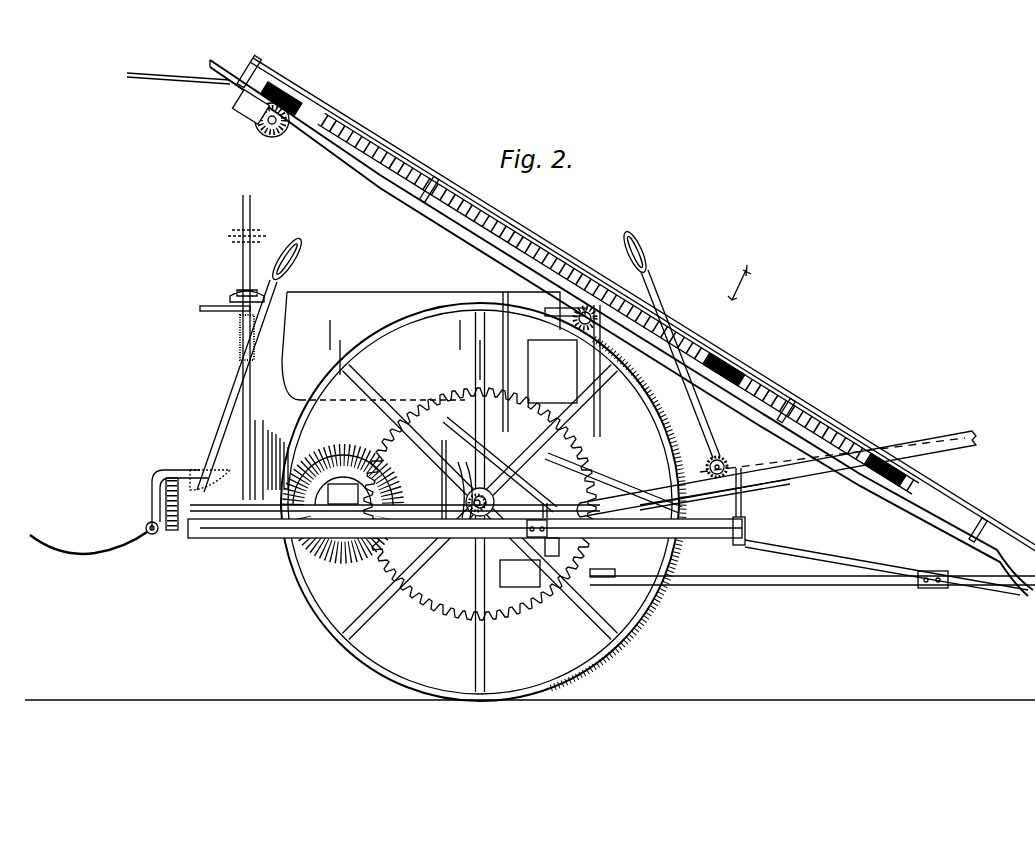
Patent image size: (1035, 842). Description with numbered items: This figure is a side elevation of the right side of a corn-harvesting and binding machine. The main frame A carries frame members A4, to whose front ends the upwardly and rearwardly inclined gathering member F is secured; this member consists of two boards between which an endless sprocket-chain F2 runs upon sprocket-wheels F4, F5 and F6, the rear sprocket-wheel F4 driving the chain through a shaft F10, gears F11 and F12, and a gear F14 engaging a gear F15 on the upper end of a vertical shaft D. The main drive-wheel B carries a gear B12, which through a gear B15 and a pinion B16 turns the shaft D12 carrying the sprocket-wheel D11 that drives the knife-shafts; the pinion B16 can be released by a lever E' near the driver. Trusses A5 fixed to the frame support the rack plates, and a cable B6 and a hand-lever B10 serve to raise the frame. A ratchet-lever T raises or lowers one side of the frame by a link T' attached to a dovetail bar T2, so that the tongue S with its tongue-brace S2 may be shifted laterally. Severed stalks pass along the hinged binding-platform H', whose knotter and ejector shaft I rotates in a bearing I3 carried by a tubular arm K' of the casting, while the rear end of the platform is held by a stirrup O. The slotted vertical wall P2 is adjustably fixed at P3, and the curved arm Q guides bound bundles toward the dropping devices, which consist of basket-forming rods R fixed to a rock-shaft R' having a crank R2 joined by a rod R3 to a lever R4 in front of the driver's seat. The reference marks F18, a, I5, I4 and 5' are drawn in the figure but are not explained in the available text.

The main drive-wheel B is at (305, 594).
The vertical shaft D is at (590, 425).
The pinion B16 is at (385, 580).
The gear B12 is at (455, 618).
The gear B15 is at (339, 444).
The shaft D12 is at (282, 538).
The main frame A is at (465, 530).
The frame member A4 is at (800, 576).
The link T' is at (886, 561).
The dovetail bar T2 is at (733, 532).
The tongue S is at (788, 466).
The tongue-brace S2 is at (770, 490).
The truss A5 is at (614, 477).
The ratchet-lever T is at (673, 353).
The inclined gathering member F is at (915, 500).
The sprocket-wheel F6 is at (925, 476).
The sprocket-wheel F5 is at (735, 368).
The curved arm Q is at (160, 78).
The gear F12 is at (258, 128).
The gear F11 is at (296, 143).
The rear sprocket-wheel F4 is at (322, 100).
The shaft F10 is at (305, 82).
The side board F18 is at (338, 170).
The endless sprocket-chain F2 is at (392, 178).
The direction arrow a is at (411, 112).
The gear F14 is at (575, 350).
The gear F15 is at (596, 326).
The vertical wall P2 is at (421, 346).
The hand-lever B10 is at (300, 292).
The adjustable fixing P3 is at (555, 305).
The knotter and ejector shaft I is at (242, 262).
The nut I5 is at (228, 229).
The collar I4 is at (230, 290).
The bearing I3 is at (243, 322).
The cable B6 is at (222, 463).
The tubular arm K' is at (269, 450).
The binding-platform H' is at (262, 432).
The sprocket-wheel D11 is at (170, 468).
The stirrup O is at (206, 477).
The crank R2 is at (160, 512).
The rock-shaft R' is at (153, 540).
The basket-forming rod R is at (88, 531).
The lever E' is at (499, 468).
The hand or foot operated lever R4 is at (530, 517).
The rod R3 is at (518, 579).
The plate 5' is at (553, 547).